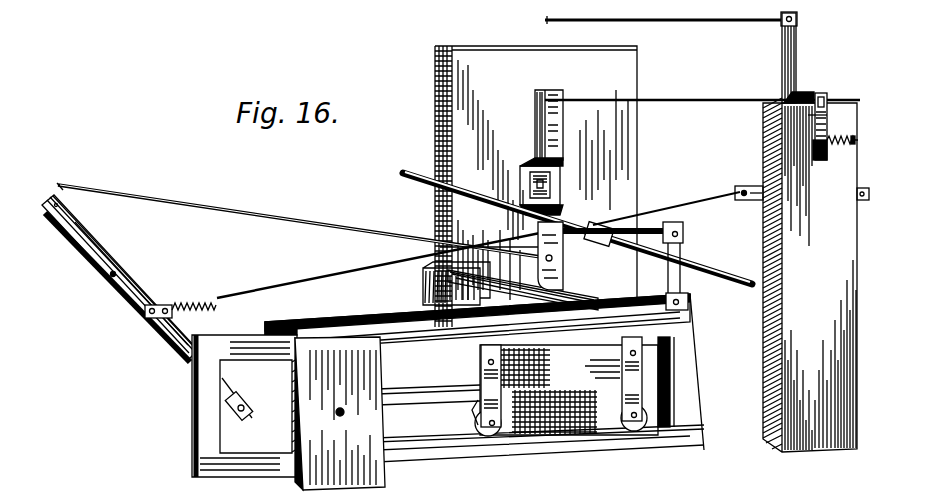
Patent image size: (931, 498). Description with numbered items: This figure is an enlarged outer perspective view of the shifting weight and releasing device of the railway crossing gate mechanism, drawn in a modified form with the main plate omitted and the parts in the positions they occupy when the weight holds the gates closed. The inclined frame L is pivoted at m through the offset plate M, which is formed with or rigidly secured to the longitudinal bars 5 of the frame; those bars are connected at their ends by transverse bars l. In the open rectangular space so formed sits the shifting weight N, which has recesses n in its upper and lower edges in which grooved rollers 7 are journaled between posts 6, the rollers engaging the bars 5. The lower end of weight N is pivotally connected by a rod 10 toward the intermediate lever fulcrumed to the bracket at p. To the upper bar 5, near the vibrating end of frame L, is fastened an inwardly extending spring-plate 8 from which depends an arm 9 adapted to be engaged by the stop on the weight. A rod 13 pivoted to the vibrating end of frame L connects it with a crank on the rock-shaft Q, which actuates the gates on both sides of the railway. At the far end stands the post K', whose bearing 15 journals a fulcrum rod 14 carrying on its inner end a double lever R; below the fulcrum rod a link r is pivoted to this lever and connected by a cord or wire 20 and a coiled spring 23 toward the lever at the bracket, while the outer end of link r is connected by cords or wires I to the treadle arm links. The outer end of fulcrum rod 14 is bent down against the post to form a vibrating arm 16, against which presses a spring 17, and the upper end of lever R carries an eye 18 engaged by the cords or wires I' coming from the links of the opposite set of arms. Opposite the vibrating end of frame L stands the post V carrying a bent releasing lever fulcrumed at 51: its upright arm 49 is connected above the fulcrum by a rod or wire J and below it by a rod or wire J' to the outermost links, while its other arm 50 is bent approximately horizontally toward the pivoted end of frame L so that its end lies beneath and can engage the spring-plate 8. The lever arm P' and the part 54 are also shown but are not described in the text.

The cords or wires I' is at (667, 12).
The eye 18 is at (797, 18).
The double lever R is at (796, 56).
The post K' is at (810, 275).
The rod or wire J is at (702, 89).
The bearing 15 is at (796, 92).
The fulcrum rod 14 is at (819, 93).
The vibrating arm 16 is at (829, 115).
The spring 17 is at (842, 149).
The cords or wires I is at (863, 207).
The link r is at (748, 200).
The post V is at (536, 186).
The upright arm 49 is at (556, 122).
The fulcrum 51 is at (530, 181).
The rock-shaft Q is at (716, 274).
The arm 50 is at (554, 256).
The arm 9 is at (654, 212).
The rod 13 is at (681, 245).
The rod or wire J' is at (302, 220).
The cord or wire 20 is at (315, 283).
The lever arm P' is at (120, 278).
The fulcrum p is at (116, 275).
The coiled spring 23 is at (205, 304).
The inclined frame L is at (477, 322).
The transverse bars l is at (692, 350).
The longitudinal bars 5 is at (502, 445).
The rod 10 is at (418, 395).
The offset plate M is at (288, 412).
The pivot m is at (341, 408).
The shifting weight N is at (577, 386).
The recesses n is at (492, 390).
The grooved rollers 7 is at (472, 416).
The posts 6 is at (628, 400).
The block 54 is at (480, 293).
The spring-plate 8 is at (550, 292).